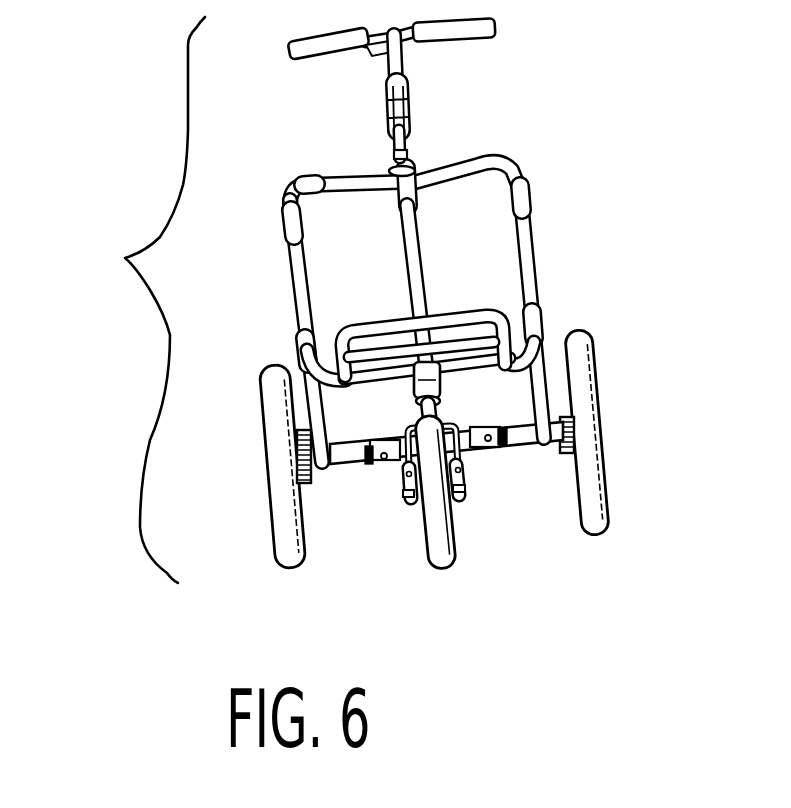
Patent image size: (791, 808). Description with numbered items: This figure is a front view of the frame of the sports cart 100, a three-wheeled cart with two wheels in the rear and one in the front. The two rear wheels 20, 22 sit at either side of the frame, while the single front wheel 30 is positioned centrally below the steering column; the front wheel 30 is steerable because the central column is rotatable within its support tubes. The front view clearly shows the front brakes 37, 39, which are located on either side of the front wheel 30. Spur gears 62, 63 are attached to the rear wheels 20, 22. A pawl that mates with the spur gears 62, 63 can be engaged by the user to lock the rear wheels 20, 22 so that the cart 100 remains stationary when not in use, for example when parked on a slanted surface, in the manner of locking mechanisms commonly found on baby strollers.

The sports cart 100 is at (132, 300).
The rear wheel 20 is at (272, 460).
The rear wheel 22 is at (606, 437).
The front wheel 30 is at (441, 570).
The front brake 37 is at (410, 461).
The front brake 39 is at (457, 460).
The spur gear 62 is at (292, 387).
The spur gear 63 is at (554, 404).